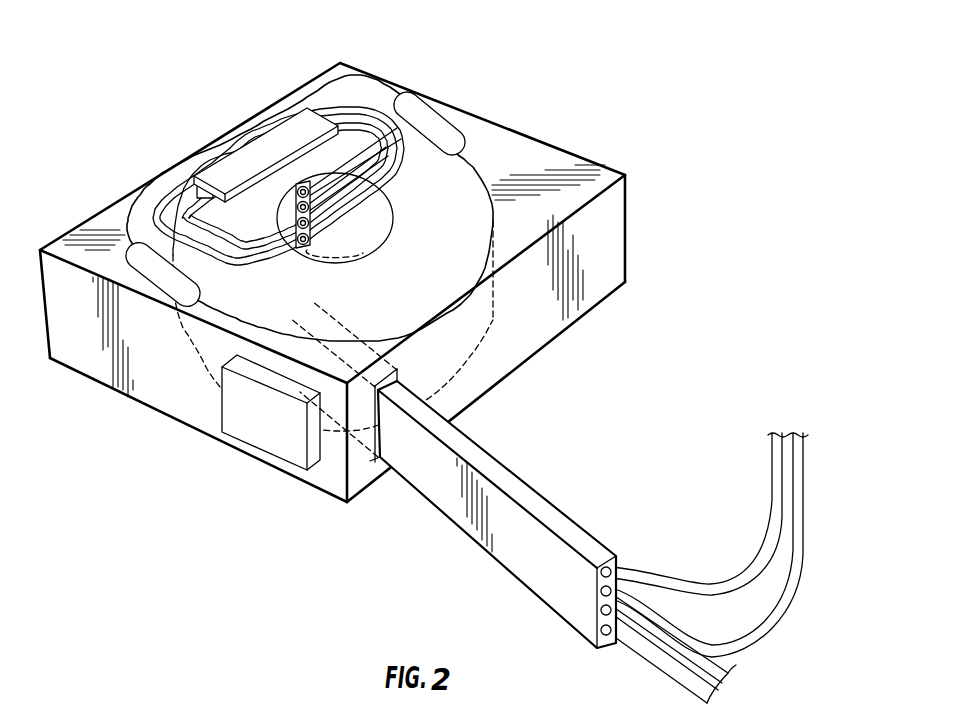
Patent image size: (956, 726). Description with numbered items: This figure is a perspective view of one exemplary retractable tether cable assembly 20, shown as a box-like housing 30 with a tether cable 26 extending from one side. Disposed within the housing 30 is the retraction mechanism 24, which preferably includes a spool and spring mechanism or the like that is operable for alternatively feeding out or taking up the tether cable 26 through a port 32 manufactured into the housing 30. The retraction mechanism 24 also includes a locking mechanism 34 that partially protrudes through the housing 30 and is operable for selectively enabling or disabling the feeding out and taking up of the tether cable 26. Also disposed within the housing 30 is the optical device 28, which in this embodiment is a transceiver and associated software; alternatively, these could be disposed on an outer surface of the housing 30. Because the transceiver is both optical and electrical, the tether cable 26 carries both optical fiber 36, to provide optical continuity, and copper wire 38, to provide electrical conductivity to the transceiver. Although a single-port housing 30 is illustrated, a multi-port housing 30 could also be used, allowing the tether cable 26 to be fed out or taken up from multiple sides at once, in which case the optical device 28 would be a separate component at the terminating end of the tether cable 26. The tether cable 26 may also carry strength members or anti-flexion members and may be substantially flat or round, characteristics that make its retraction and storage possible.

The retractable tether cable assembly 20 is at (600, 88).
The retraction mechanism 24 is at (473, 167).
The tether cable 26 is at (533, 487).
The optical device 28 is at (277, 128).
The housing 30 is at (415, 93).
The port 32 is at (370, 472).
The locking mechanism 34 is at (262, 462).
The optical fiber 36 is at (173, 195).
The copper wire 38 is at (375, 102).